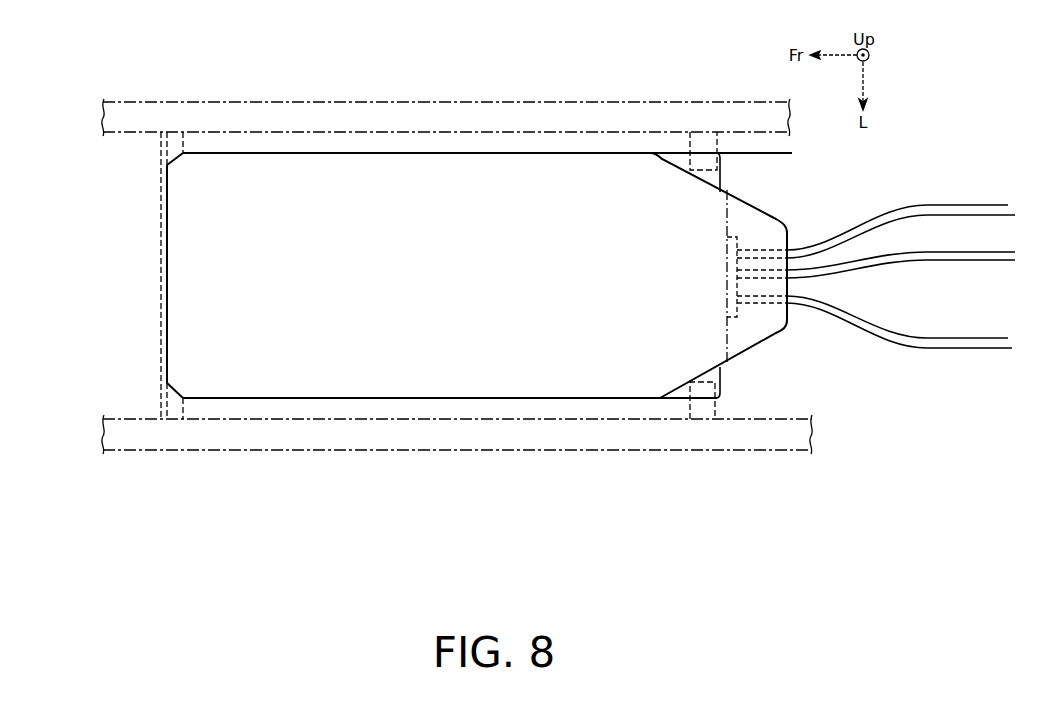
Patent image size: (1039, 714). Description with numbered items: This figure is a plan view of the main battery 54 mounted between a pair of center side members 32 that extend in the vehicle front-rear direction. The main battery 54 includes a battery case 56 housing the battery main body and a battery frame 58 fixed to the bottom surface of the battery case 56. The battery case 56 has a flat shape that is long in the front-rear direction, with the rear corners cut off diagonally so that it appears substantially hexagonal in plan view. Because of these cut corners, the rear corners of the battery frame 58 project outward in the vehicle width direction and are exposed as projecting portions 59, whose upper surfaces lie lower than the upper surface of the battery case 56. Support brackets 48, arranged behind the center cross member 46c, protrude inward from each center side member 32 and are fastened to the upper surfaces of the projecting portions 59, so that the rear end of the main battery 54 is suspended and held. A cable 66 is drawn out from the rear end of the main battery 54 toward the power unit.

The center side member 32 is at (523, 115).
The center cross member 46c is at (160, 148).
The support bracket 48 is at (726, 140).
The main battery 54 is at (498, 230).
The battery case 56 is at (400, 182).
The battery frame 58 is at (732, 295).
The projecting portion 59 is at (715, 275).
The cable 66 is at (964, 252).